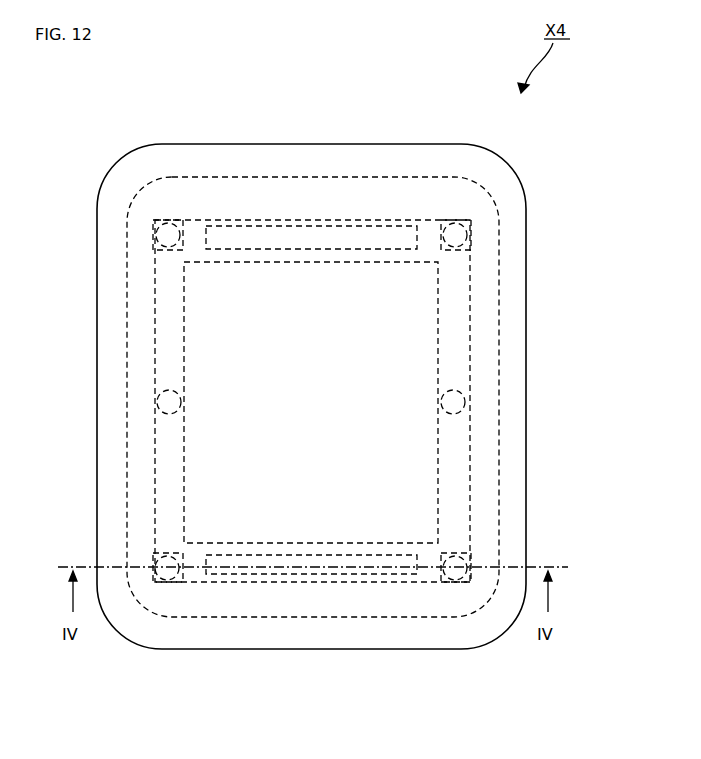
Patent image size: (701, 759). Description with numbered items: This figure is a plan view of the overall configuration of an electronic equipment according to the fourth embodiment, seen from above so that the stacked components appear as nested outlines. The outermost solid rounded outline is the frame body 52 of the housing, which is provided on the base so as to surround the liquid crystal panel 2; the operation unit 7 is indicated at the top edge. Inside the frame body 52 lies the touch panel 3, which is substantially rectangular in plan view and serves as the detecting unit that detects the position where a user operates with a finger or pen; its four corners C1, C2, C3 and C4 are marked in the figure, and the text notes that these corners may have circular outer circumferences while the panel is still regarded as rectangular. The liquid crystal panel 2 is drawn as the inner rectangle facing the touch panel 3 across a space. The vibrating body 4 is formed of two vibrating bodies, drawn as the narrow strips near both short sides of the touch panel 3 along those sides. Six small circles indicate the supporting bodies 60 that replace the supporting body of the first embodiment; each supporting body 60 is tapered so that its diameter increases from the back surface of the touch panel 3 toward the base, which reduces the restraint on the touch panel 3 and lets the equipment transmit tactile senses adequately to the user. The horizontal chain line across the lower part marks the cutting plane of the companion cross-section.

The operation unit 7 is at (203, 145).
The frame body 52 is at (527, 345).
The touch panel 3 is at (460, 272).
The liquid crystal panel 2 is at (428, 472).
The vibrating body 4 is at (310, 228).
The supporting body 60 is at (157, 237).
The corner C1 is at (170, 232).
The corner C2 is at (165, 565).
The corner C3 is at (452, 232).
The corner C4 is at (458, 565).